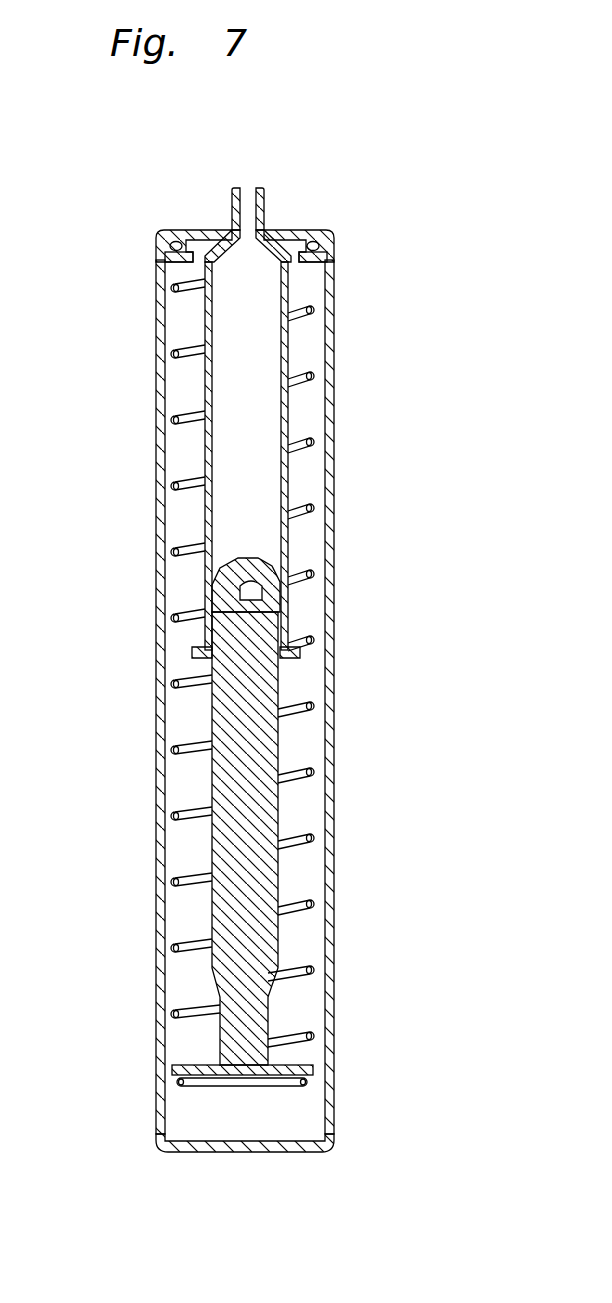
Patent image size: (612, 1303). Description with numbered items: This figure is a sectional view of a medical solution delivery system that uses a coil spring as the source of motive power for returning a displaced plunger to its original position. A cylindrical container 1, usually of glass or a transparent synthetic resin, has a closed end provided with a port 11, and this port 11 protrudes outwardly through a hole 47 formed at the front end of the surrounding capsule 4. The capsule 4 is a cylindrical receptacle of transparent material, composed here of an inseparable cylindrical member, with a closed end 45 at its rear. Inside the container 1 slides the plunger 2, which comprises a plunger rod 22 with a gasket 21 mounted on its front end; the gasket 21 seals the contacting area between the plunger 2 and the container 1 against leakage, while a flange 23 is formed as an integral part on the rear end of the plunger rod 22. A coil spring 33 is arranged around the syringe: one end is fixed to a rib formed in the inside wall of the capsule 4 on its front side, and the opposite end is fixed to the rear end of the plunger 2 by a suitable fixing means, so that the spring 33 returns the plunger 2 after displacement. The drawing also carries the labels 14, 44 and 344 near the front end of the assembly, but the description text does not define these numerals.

The container 1 is at (207, 444).
The plunger 2 is at (333, 812).
The capsule 4 is at (334, 378).
The port 11 is at (264, 194).
The barrel flange 14 is at (197, 660).
The gasket 21 is at (272, 564).
The plunger rod 22 is at (280, 823).
The flange 23 is at (295, 1064).
The coil spring 33 is at (305, 513).
The cap 44 is at (203, 230).
The closed end 45 is at (234, 1153).
The hole 47 is at (297, 232).
The cap lip 344 is at (178, 245).